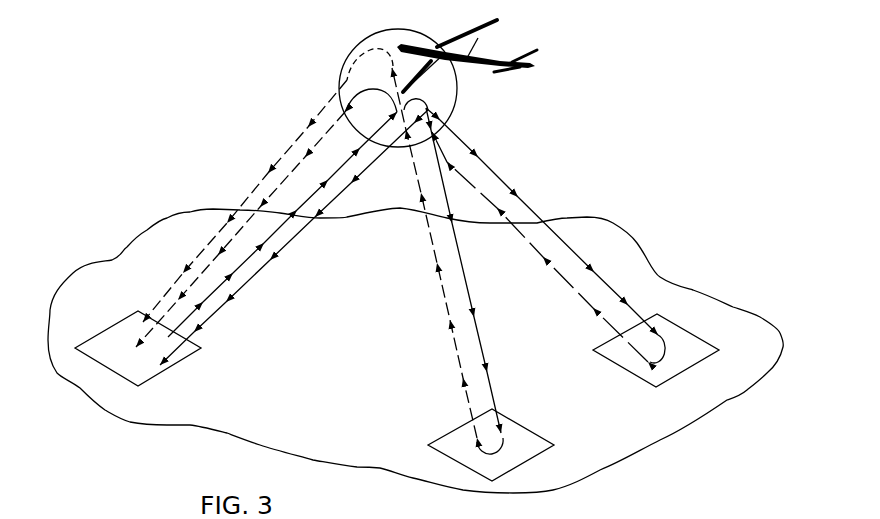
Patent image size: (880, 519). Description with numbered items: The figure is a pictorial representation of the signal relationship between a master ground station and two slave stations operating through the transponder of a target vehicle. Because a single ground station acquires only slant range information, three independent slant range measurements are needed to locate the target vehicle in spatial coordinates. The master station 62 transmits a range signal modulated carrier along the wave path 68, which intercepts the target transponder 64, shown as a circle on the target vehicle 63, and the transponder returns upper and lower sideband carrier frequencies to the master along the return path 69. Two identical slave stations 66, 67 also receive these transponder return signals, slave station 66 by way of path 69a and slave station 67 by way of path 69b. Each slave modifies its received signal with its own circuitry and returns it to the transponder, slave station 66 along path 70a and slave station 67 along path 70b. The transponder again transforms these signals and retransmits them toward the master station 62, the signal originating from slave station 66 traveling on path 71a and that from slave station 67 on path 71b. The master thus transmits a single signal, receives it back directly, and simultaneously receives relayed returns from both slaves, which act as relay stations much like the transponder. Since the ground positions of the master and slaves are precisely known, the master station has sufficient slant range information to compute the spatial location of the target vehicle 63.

The master station 62 is at (163, 372).
The target vehicle 63 is at (468, 58).
The target transponder 64 is at (375, 31).
The slave station 66 is at (458, 427).
The slave station 67 is at (610, 360).
The wave path 68 is at (243, 263).
The return path 69 is at (230, 299).
The path 69a is at (467, 285).
The path 69b is at (493, 172).
The return path 70a is at (442, 286).
The return path 70b is at (527, 241).
The retransmission path 71a is at (260, 186).
The retransmission path 71b is at (318, 143).